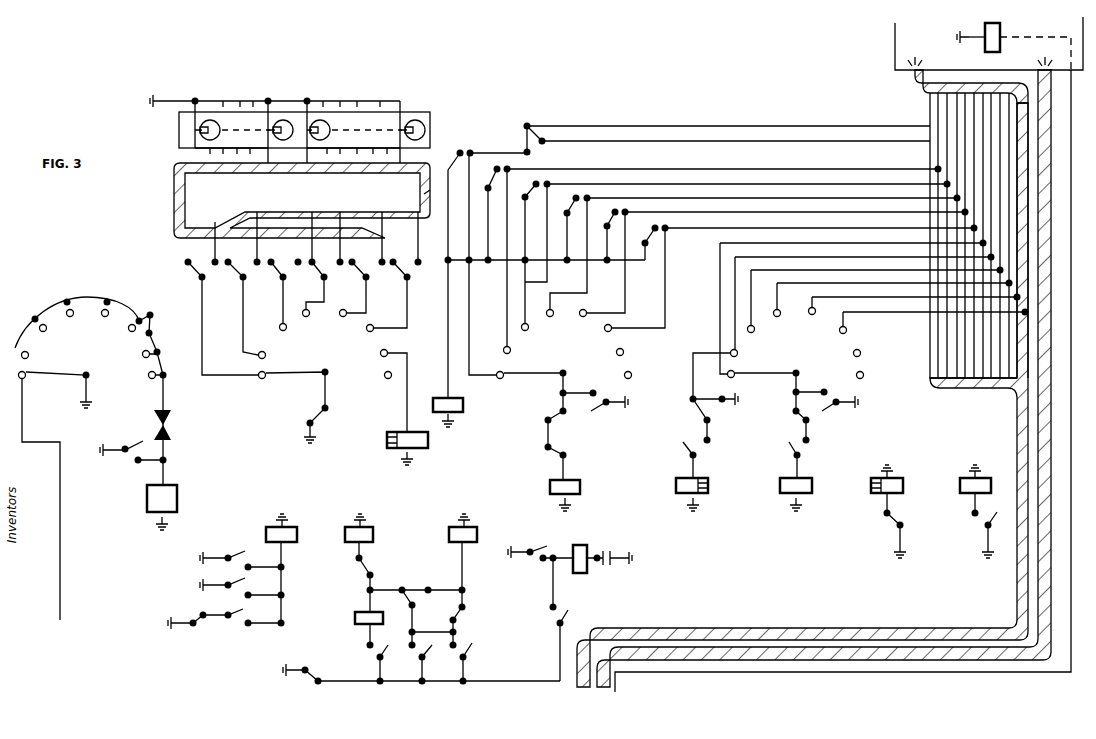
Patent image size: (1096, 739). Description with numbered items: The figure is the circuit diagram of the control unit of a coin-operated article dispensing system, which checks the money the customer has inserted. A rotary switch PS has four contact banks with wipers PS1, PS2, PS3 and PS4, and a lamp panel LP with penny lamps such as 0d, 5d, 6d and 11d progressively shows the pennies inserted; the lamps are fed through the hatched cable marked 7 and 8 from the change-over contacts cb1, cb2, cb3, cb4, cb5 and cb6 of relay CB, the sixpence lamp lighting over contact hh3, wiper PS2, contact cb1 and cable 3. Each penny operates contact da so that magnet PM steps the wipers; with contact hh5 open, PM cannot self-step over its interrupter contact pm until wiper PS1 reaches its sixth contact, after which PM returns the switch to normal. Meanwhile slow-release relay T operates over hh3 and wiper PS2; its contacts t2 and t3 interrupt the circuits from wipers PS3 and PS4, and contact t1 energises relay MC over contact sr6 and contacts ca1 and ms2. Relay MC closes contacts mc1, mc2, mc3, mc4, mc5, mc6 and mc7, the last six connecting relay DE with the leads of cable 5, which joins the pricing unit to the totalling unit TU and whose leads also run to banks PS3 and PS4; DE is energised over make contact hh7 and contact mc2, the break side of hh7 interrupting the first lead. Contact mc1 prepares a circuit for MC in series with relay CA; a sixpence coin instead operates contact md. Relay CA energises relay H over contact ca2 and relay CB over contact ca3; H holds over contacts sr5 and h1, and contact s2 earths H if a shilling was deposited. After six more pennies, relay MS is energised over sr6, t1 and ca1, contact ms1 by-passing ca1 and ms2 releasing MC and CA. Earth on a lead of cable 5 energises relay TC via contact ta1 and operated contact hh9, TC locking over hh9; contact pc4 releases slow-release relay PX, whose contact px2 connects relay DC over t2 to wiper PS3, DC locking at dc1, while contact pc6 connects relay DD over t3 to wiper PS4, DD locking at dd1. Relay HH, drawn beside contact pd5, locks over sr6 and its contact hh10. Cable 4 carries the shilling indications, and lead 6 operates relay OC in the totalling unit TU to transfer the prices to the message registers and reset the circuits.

The lamp panel LP is at (300, 129).
The first lamp 0d is at (215, 126).
The fivepence lamp 5d is at (271, 132).
The sixpence lamp 6d is at (322, 126).
The lamp 11d is at (435, 113).
The cable band 7 is at (178, 194).
The cable band 8 is at (418, 195).
The contact of relay CB cb1 is at (206, 272).
The contact of relay CB cb2 is at (247, 272).
The contact of relay CB cb3 is at (289, 272).
The contact of relay CB cb4 is at (330, 272).
The contact of relay CB cb5 is at (370, 272).
The contact of relay CB cb6 is at (411, 272).
The rotary switch PS is at (85, 327).
The wiper of first contact bank PS1 is at (62, 378).
The wiper of second contact bank PS2 is at (304, 354).
The wiper of third contact bank PS3 is at (564, 361).
The wiper of fourth contact bank PS4 is at (861, 326).
The cable 3 is at (50, 499).
The contact of relay HH hh5 is at (158, 341).
The self-interrupting contact pm is at (172, 430).
The contact of relay DA da is at (133, 457).
The magnet PM is at (173, 507).
The contact of relay HH hh3 is at (300, 425).
The slow-release relay T is at (407, 441).
The relay DE is at (447, 298).
The contact of relay HH hh7 is at (713, 138).
The contact of relay MC mc2 is at (487, 256).
The contact of relay MC mc3 is at (710, 249).
The contact of relay MC mc4 is at (735, 246).
The contact of relay MC mc5 is at (755, 246).
The contact of relay MC mc6 is at (778, 255).
The contact of relay MC mc7 is at (795, 270).
The contact of relay DC dc1 is at (609, 410).
The contact of relay T t2 is at (550, 424).
The contact of relay PX px2 is at (568, 458).
The relay DC is at (576, 495).
The contact of relay DD dd1 is at (840, 410).
The contact of relay T t3 is at (796, 426).
The contact of relay PC pc6 is at (807, 460).
The relay DD is at (808, 494).
The contact of relay TA ta1 is at (714, 414).
The contact of relay HH hh9 is at (702, 460).
The slow-release relay TC is at (702, 494).
The slow-release relay PX is at (897, 491).
The contact of relay PC pc4 is at (907, 535).
The relay CB is at (986, 491).
The contact of relay CA ca3 is at (977, 535).
The relay H is at (277, 570).
The contact of relay CA ca2 is at (222, 552).
The contact of relay S s2 is at (222, 592).
The contact sr5 is at (187, 628).
The contact of relay H h1 is at (223, 621).
The relay MC is at (370, 538).
The contact of relay MS ms2 is at (379, 585).
The contact of relay CA ca1 is at (427, 610).
The relay MS is at (474, 562).
The contact of relay MS ms1 is at (471, 628).
The relay CA is at (358, 629).
The contact of relay MC mc1 is at (370, 665).
The contact of relay MD md is at (433, 665).
The contact of relay T t1 is at (470, 664).
The contact sr6 is at (304, 670).
The contact pd5 is at (527, 562).
The relay HH is at (586, 570).
The contact of relay HH hh10 is at (544, 645).
The totalling unit TU is at (895, 47).
The relay OC is at (989, 40).
The cable 5 is at (916, 84).
The cable 4 is at (1040, 82).
The lead 6 is at (1066, 652).